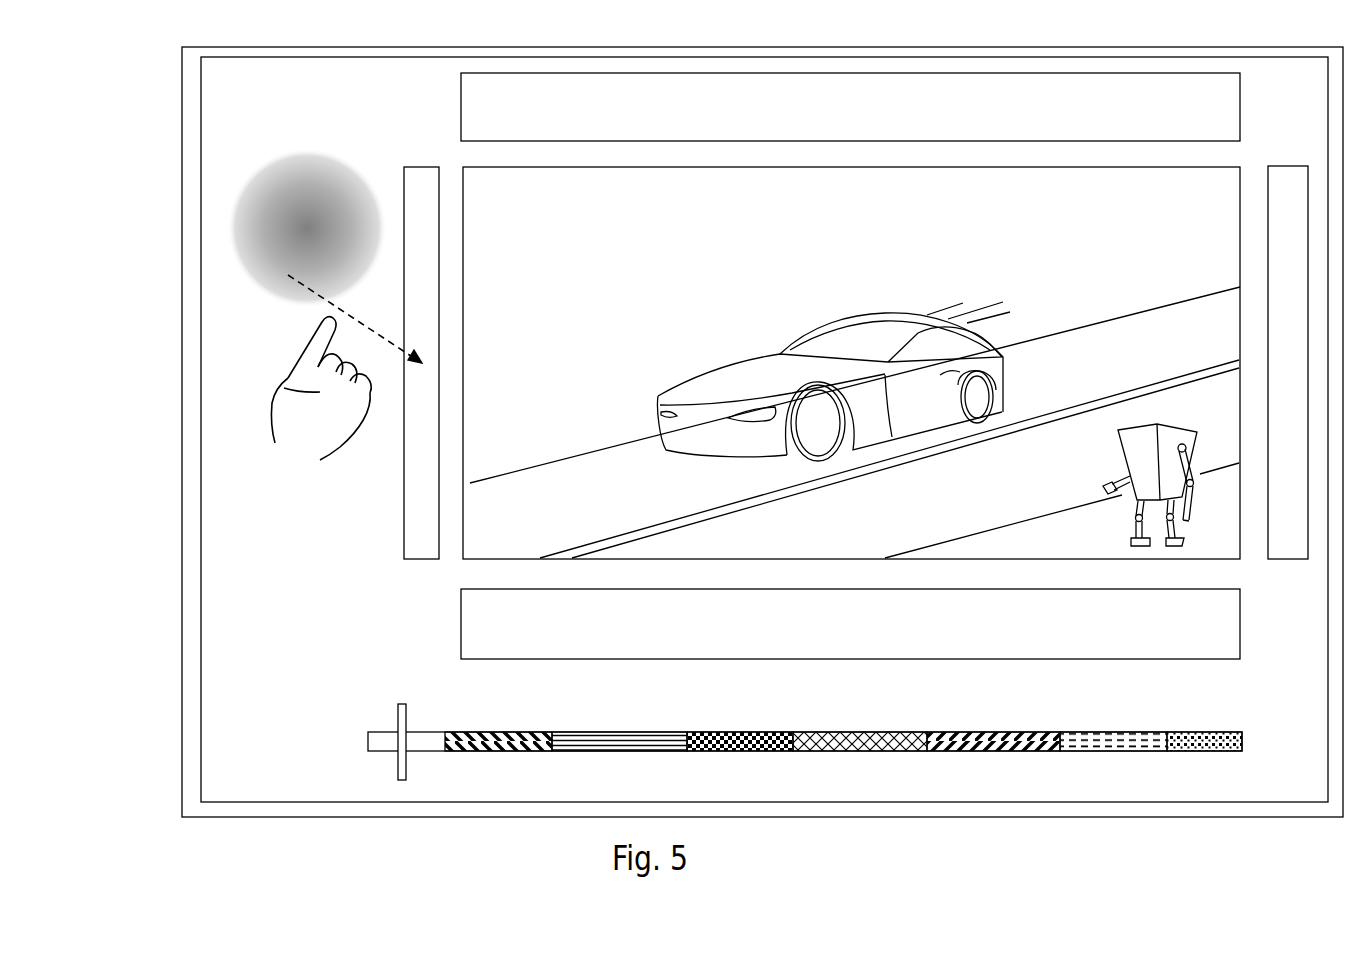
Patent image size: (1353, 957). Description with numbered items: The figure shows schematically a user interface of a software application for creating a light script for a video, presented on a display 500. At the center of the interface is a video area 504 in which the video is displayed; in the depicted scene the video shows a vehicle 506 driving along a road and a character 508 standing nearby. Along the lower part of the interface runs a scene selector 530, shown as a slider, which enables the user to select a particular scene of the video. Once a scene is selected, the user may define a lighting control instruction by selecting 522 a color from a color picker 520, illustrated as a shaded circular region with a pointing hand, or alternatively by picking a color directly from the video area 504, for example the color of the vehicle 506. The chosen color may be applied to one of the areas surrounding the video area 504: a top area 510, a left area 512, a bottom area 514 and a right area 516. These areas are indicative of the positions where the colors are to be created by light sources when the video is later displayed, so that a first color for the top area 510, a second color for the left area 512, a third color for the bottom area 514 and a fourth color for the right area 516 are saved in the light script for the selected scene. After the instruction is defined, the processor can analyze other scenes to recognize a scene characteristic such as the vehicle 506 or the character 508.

The display 500 is at (210, 572).
The video area 504 is at (885, 228).
The vehicle 506 is at (742, 370).
The character 508 is at (1140, 457).
The top area 510 is at (490, 115).
The left area 512 is at (410, 530).
The bottom area 514 is at (472, 625).
The right area 516 is at (1270, 233).
The color picker 520 is at (245, 219).
The selecting 522 is at (286, 386).
The scene selector 530 is at (380, 742).